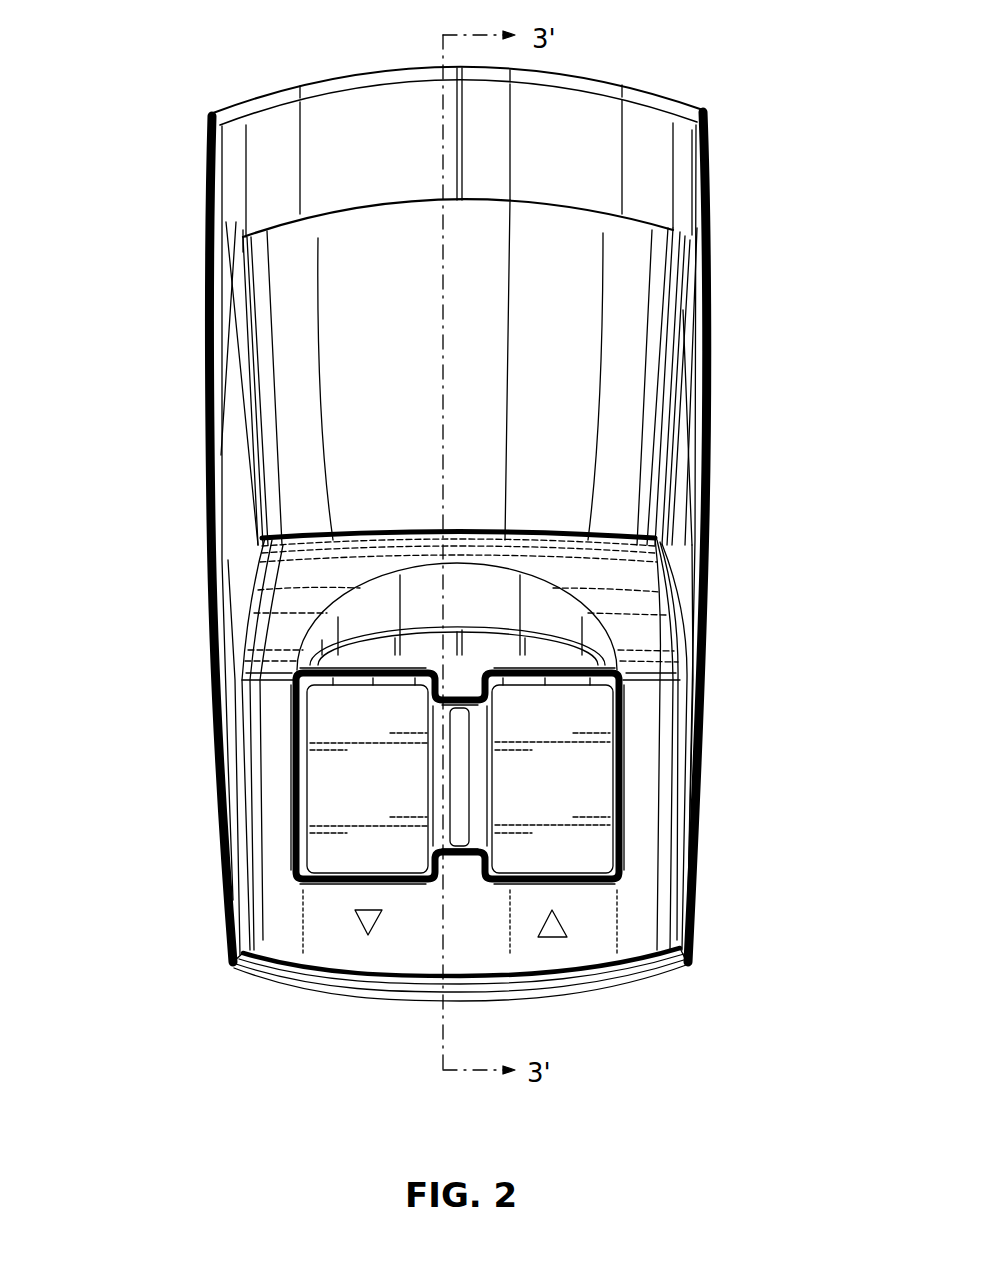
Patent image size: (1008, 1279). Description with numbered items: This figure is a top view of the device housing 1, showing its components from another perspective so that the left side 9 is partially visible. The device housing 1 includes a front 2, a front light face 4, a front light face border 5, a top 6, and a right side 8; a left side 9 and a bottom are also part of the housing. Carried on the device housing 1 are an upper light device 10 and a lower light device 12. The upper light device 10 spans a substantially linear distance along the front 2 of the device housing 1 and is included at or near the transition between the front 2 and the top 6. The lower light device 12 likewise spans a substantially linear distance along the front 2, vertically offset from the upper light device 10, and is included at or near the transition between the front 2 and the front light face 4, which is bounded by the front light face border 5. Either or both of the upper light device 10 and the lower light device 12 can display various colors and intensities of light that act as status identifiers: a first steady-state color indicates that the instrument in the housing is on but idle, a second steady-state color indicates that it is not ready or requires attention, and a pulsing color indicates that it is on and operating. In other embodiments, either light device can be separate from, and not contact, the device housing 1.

The device housing 1 is at (770, 163).
The front 2 is at (290, 1027).
The front light face 4 is at (322, 626).
The front light face border 5 is at (615, 589).
The top 6 is at (231, 89).
The right side 8 is at (730, 440).
The left side 9 is at (160, 262).
The upper light device 10 is at (405, 527).
The lower light device 12 is at (505, 652).